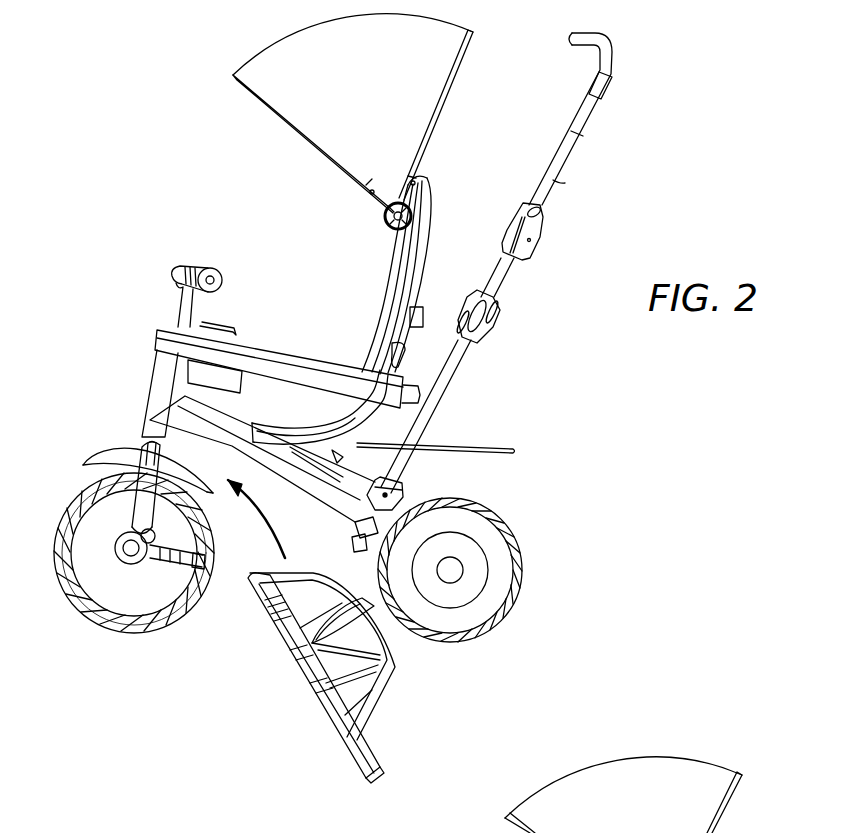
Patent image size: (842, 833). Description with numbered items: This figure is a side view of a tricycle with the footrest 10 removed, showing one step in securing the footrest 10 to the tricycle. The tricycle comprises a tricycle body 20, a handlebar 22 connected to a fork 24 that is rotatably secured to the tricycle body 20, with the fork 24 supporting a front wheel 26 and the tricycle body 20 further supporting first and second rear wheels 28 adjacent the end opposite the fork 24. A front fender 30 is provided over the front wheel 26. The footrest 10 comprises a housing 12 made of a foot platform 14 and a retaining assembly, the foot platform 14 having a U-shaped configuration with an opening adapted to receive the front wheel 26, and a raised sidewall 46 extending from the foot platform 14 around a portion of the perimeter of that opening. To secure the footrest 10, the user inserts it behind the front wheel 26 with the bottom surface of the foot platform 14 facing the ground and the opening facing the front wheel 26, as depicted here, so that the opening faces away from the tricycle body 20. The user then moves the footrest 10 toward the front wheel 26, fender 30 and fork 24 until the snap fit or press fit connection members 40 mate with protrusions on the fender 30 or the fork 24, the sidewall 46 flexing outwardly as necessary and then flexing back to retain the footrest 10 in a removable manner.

The footrest 10 is at (262, 688).
The housing 12 is at (343, 743).
The foot platform 14 is at (365, 746).
The tricycle body 20 is at (320, 483).
The handlebar 22 is at (180, 312).
The fork 24 is at (143, 483).
The front wheel 26 is at (143, 630).
The rear wheels 28 is at (510, 530).
The front fender 30 is at (103, 457).
The snap fit or press fit connection members 40 is at (353, 622).
The raised sidewall 46 is at (363, 677).